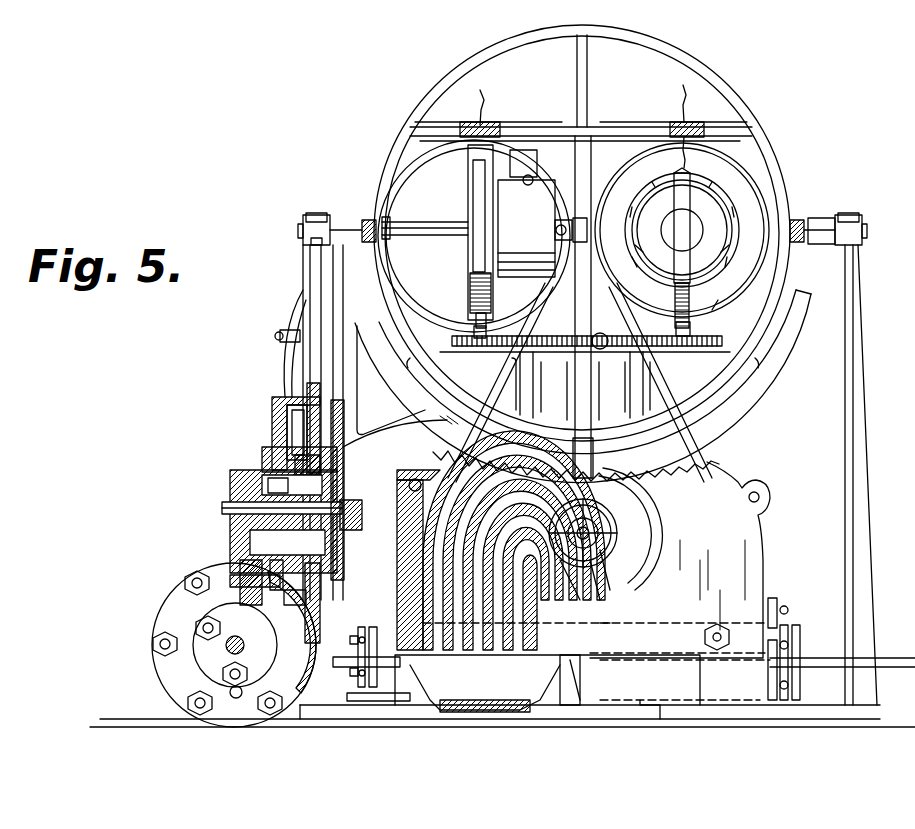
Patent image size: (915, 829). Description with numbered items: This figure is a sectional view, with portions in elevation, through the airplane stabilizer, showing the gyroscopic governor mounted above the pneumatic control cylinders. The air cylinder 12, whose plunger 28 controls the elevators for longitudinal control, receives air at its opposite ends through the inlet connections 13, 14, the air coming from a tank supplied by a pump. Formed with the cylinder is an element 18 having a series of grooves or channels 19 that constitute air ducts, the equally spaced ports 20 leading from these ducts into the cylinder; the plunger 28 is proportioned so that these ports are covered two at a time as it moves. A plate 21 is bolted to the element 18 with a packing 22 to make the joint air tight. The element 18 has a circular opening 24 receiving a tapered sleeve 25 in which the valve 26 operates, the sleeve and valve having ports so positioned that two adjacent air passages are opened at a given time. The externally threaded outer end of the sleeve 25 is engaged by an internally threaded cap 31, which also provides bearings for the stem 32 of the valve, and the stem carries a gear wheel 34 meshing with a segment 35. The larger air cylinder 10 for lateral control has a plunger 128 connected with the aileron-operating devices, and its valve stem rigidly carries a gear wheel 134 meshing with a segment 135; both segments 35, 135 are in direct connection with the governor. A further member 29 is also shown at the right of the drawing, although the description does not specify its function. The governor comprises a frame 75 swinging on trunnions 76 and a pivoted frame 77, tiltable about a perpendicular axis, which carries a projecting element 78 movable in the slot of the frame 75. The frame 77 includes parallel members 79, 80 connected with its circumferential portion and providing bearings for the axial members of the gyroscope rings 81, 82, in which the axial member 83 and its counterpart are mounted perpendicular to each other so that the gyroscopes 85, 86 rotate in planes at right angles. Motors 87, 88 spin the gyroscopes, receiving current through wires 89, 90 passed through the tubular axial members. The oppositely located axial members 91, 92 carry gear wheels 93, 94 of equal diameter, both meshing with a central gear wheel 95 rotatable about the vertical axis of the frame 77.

The air cylinder 10 is at (185, 665).
The air cylinder 12 is at (480, 690).
The inlet connection 13 is at (800, 715).
The inlet connection 14 is at (355, 690).
The element 18 is at (275, 400).
The grooves or channels 19 is at (290, 430).
The ports 20 is at (490, 630).
The plate 21 is at (302, 268).
The packing 22 is at (303, 365).
The circular opening 24 is at (262, 455).
The tapered sleeve 25 is at (345, 470).
The valve 26 is at (250, 487).
The plunger 28 is at (575, 700).
The shaft 29 is at (860, 660).
The cap 31 is at (240, 570).
The stem 32 is at (222, 508).
The gear wheel 34 is at (608, 575).
The segment 35 is at (706, 462).
The frame 75 is at (780, 358).
The trunnions 76 is at (303, 228).
The pivoted frame 77 is at (765, 327).
The projecting element 78 is at (573, 458).
The member 79 is at (615, 128).
The member 80 is at (612, 355).
The gyroscope ring 81 is at (420, 160).
The gyroscope ring 82 is at (745, 157).
The axial member 83 is at (492, 125).
The gyroscope 85 is at (470, 272).
The gyroscope 86 is at (689, 230).
The motor 87 is at (542, 213).
The motor 88 is at (692, 248).
The wire 89 is at (484, 100).
The wire 90 is at (686, 95).
The axial member 91 is at (470, 328).
The axial member 92 is at (695, 330).
The gear wheel 93 is at (460, 350).
The gear wheel 94 is at (700, 341).
The central gear wheel 95 is at (562, 338).
The plunger 128 is at (217, 643).
The gear wheel 134 is at (362, 515).
The segment 135 is at (345, 440).